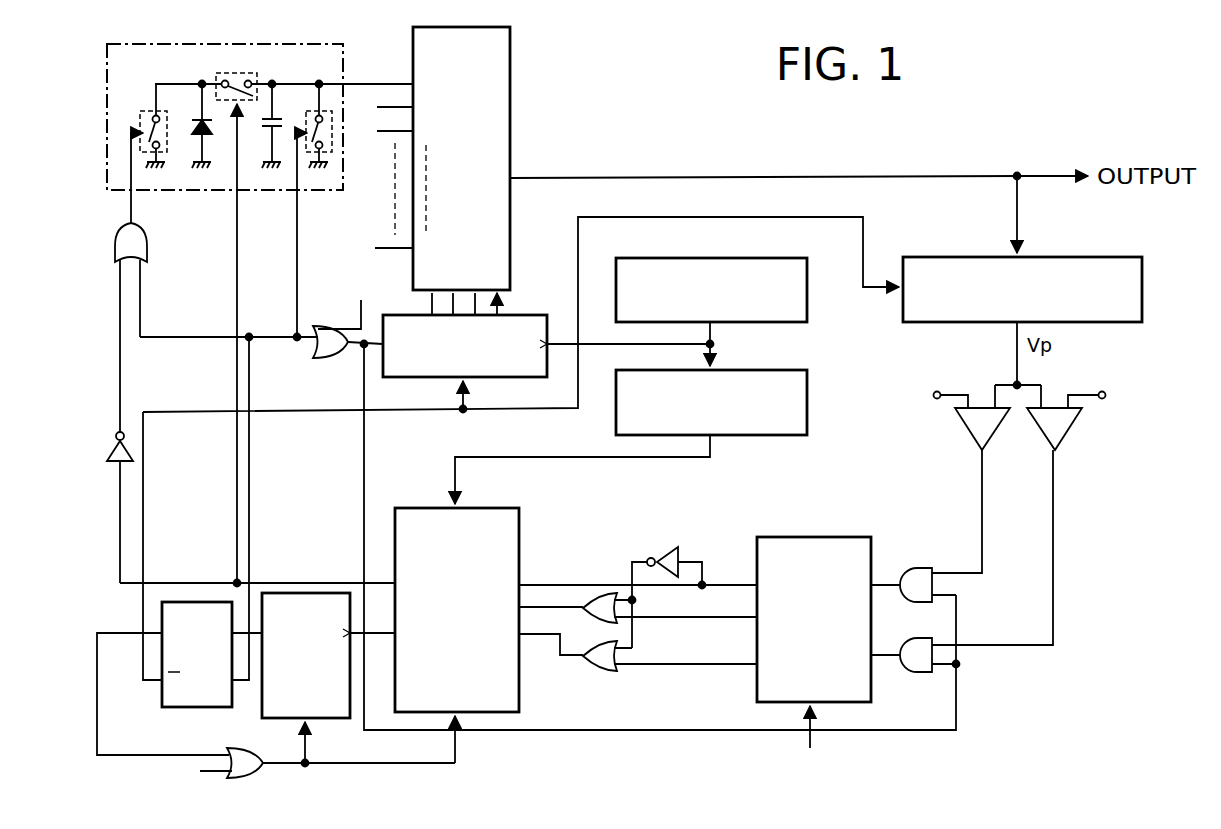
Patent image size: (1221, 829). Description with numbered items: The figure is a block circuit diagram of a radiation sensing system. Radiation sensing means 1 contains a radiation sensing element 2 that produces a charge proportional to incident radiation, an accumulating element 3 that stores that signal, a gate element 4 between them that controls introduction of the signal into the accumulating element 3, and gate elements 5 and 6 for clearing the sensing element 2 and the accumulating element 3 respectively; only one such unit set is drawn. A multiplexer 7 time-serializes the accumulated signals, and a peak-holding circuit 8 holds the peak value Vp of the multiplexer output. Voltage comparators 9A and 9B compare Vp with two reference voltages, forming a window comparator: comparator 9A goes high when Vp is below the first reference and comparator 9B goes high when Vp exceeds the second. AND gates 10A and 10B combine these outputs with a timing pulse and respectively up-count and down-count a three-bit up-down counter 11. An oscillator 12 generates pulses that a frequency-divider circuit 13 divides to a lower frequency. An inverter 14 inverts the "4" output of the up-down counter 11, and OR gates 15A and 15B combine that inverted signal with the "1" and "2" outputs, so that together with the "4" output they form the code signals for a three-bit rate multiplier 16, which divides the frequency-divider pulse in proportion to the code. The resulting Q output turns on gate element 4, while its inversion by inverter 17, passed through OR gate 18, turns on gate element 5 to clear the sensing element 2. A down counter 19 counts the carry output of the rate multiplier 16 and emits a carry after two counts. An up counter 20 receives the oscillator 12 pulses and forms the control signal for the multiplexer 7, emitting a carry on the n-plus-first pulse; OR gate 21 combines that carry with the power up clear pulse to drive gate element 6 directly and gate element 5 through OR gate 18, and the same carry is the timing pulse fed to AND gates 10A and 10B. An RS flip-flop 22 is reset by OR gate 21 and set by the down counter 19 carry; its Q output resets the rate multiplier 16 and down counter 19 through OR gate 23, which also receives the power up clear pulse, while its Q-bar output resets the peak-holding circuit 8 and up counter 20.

The radiation sensing means 1 is at (106, 104).
The radiation sensing element 2 is at (198, 128).
The accumulating element 3 is at (268, 125).
The gate element 4 is at (223, 78).
The gate element 5 is at (150, 124).
The gate element 6 is at (314, 120).
The multiplexer 7 is at (498, 62).
The peak-holding circuit 8 is at (1142, 287).
The voltage comparator 9A is at (972, 437).
The voltage comparator 9B is at (1060, 437).
The AND gate 10A is at (917, 570).
The AND gate 10B is at (915, 672).
The 3-bit binary up-down counter 11 is at (806, 537).
The oscillator 12 is at (807, 307).
The frequency-divider circuit 13 is at (807, 400).
The inverter 14 is at (668, 548).
The OR gate 15A is at (603, 673).
The OR gate 15B is at (600, 603).
The 3-bit rate multiplier 16 is at (519, 533).
The inverter 17 is at (114, 446).
The OR gate 18 is at (116, 241).
The down counter 19 is at (307, 593).
The up counter 20 is at (537, 314).
The OR gate 21 is at (328, 348).
The RS flip-flop 22 is at (162, 699).
The OR gate 23 is at (288, 777).